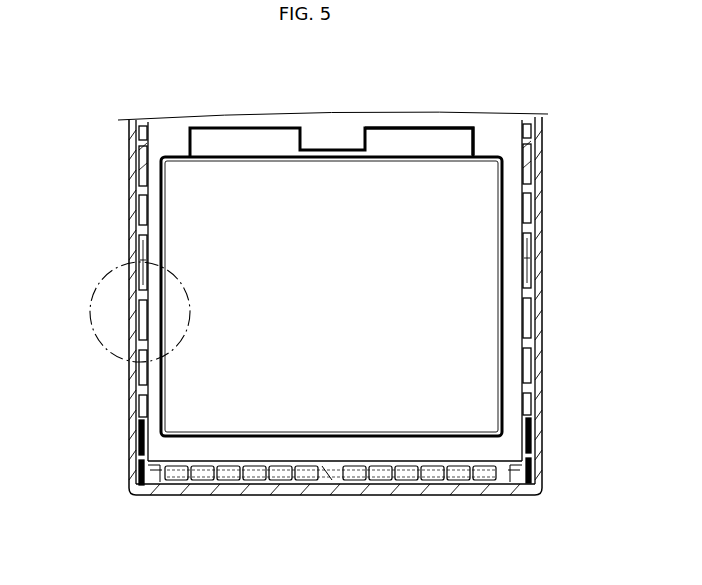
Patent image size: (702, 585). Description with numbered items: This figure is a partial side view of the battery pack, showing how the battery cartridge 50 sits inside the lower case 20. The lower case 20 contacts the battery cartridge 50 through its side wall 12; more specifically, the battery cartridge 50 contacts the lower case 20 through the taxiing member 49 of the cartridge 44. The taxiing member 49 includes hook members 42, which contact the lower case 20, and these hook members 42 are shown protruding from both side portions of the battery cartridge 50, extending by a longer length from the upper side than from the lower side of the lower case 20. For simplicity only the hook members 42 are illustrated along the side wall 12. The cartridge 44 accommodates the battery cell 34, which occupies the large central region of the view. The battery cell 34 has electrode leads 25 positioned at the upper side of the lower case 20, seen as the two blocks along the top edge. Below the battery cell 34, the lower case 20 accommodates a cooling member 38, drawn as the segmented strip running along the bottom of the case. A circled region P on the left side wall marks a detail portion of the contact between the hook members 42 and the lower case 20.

The side wall 12 is at (130, 462).
The lower case 20 is at (280, 304).
The electrode leads 25 is at (433, 130).
The battery cell 34 is at (502, 366).
The cooling member 38 is at (330, 480).
The hook members 42 is at (88, 156).
The taxiing member 49 is at (140, 143).
The cartridge 44 is at (331, 117).
The battery cartridge 50 is at (331, 130).
The portion P is at (112, 264).